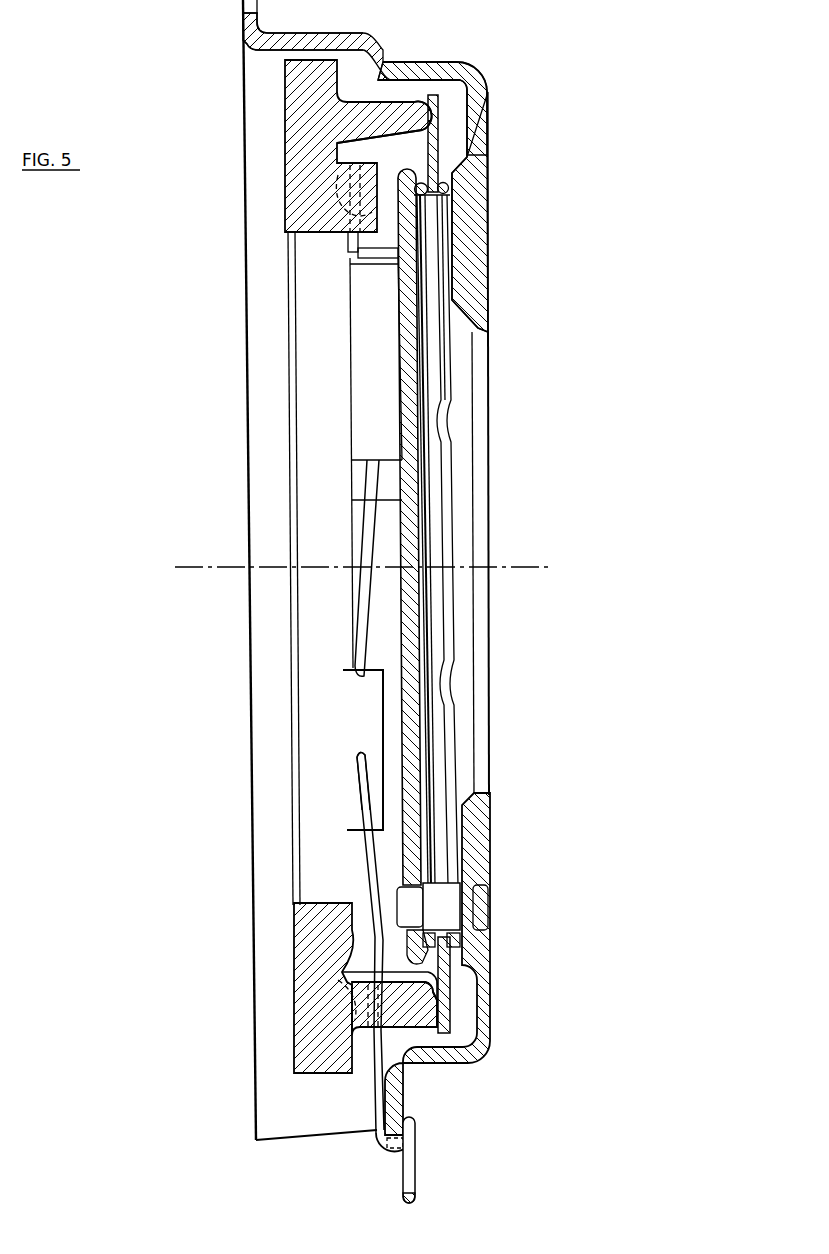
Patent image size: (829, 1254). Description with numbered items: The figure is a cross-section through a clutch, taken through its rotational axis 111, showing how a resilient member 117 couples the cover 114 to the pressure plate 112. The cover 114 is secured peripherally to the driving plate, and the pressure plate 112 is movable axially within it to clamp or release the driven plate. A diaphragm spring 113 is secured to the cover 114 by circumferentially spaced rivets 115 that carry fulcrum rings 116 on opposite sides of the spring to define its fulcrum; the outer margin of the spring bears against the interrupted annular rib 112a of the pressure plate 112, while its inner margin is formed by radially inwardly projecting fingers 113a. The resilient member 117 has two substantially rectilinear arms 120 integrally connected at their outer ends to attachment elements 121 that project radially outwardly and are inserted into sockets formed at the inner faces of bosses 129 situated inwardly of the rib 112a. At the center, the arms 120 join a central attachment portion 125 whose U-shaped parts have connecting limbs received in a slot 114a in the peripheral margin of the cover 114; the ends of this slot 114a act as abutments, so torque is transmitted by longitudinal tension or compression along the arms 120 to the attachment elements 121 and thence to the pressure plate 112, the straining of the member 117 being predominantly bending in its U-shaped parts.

The axis 111 is at (536, 556).
The pressure plate 112 is at (302, 128).
The interrupted annular rib 112a is at (387, 113).
The diaphragm spring 113 is at (446, 140).
The radially inwardly projecting fingers 113a is at (437, 374).
The cover 114 is at (484, 102).
The slot 114a is at (393, 1148).
The rivets 115 is at (440, 897).
The fulcrum rings 116 is at (420, 196).
The resilient member 117 is at (356, 808).
The arms 120 is at (364, 537).
The attachment elements 121 is at (352, 222).
The central attachment portion 125 is at (420, 1178).
The bosses 129 is at (370, 185).